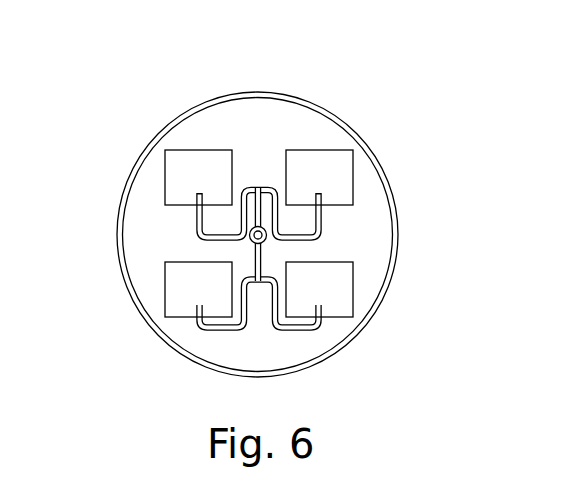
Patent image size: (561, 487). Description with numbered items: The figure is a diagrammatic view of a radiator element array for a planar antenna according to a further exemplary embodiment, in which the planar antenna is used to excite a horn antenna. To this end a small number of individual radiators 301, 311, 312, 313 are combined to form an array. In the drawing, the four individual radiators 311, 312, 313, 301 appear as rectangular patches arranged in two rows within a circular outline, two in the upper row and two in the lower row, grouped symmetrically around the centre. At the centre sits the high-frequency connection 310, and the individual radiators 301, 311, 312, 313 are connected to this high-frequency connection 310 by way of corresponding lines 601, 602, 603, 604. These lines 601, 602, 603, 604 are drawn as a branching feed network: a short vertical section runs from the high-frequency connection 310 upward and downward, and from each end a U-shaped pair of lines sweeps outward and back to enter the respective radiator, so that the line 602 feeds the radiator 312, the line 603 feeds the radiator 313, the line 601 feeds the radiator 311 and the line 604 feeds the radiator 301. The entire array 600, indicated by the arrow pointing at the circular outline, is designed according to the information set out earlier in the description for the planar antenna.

The array 600 is at (425, 99).
The high-frequency connection 310 is at (267, 239).
The individual radiator 311 is at (165, 295).
The individual radiator 312 is at (163, 183).
The individual radiator 313 is at (353, 165).
The individual radiator 301 is at (353, 283).
The line 601 is at (218, 332).
The line 602 is at (197, 220).
The line 603 is at (323, 220).
The line 604 is at (295, 332).